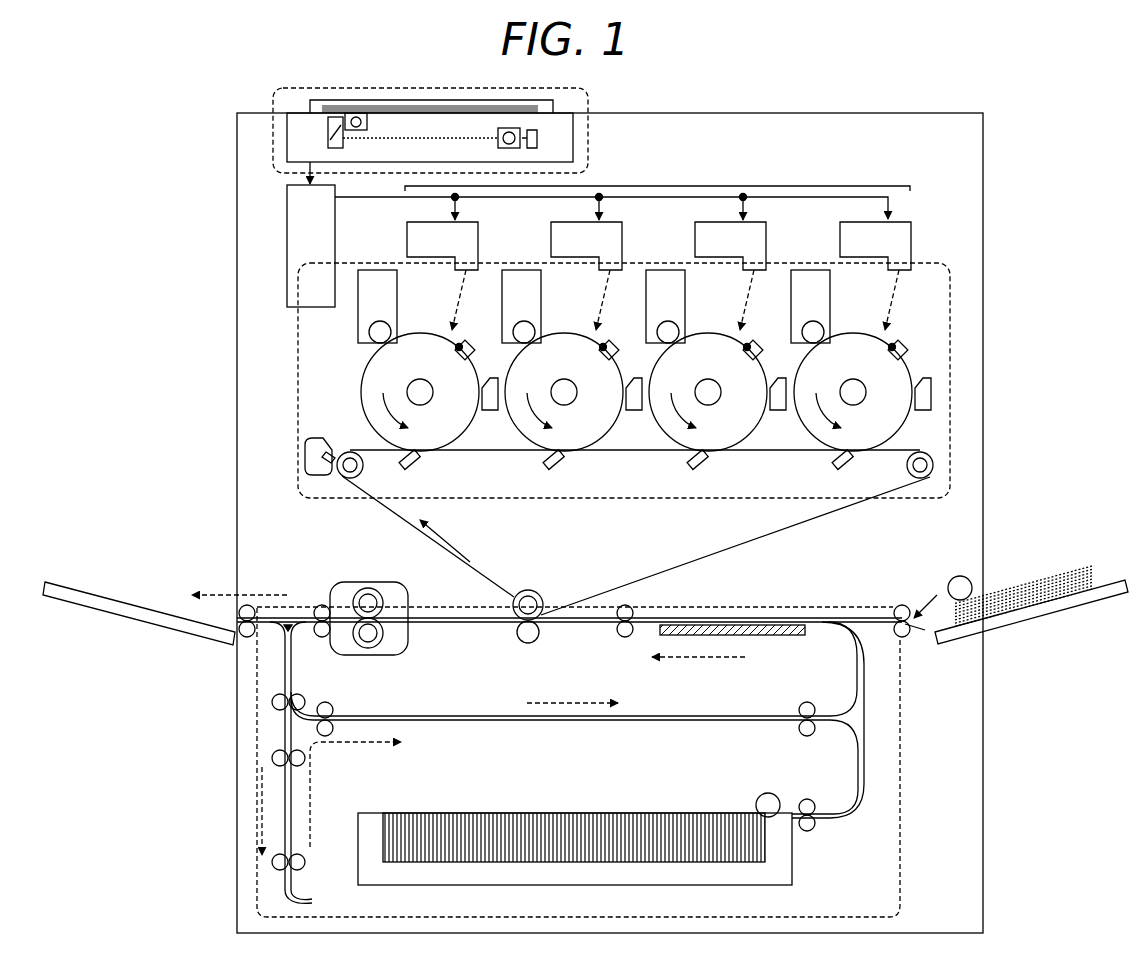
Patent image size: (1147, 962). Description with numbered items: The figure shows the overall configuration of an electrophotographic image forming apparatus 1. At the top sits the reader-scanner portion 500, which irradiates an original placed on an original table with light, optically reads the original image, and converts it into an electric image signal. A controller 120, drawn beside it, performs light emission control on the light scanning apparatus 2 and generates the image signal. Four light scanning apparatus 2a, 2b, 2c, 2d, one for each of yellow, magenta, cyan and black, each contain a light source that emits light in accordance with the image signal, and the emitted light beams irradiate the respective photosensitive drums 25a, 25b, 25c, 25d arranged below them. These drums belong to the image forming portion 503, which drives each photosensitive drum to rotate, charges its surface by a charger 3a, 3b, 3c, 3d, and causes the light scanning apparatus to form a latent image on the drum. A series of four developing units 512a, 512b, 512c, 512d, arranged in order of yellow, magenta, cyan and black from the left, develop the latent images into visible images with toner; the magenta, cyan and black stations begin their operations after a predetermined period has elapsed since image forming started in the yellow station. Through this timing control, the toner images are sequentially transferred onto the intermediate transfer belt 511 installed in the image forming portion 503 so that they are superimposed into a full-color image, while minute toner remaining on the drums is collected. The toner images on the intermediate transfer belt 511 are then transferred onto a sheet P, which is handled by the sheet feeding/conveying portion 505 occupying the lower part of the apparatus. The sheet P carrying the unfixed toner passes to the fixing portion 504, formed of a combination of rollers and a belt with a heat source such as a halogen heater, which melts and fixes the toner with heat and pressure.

The image forming apparatus 1 is at (670, 113).
The reader-scanner portion 500 is at (590, 132).
The controller 120 is at (285, 310).
The light scanning apparatus 2 is at (622, 188).
The light scanning apparatus 2a is at (407, 232).
The light scanning apparatus 2b is at (563, 262).
The light scanning apparatus 2c is at (707, 262).
The light scanning apparatus 2d is at (852, 265).
The developing unit 512a is at (397, 320).
The developing unit 512b is at (553, 306).
The developing unit 512c is at (697, 306).
The developing unit 512d is at (842, 306).
The photosensitive drum 25a is at (362, 373).
The photosensitive drum 25b is at (498, 347).
The photosensitive drum 25c is at (642, 347).
The photosensitive drum 25d is at (787, 347).
The charger 3a is at (462, 352).
The charger 3b is at (573, 401).
The charger 3c is at (717, 401).
The charger 3d is at (862, 401).
The image forming portion 503 is at (298, 488).
The intermediate transfer belt 511 is at (780, 533).
The fixing portion 504 is at (366, 582).
The sheet feeding/conveying portion 505 is at (905, 765).
The sheet P is at (1077, 568).